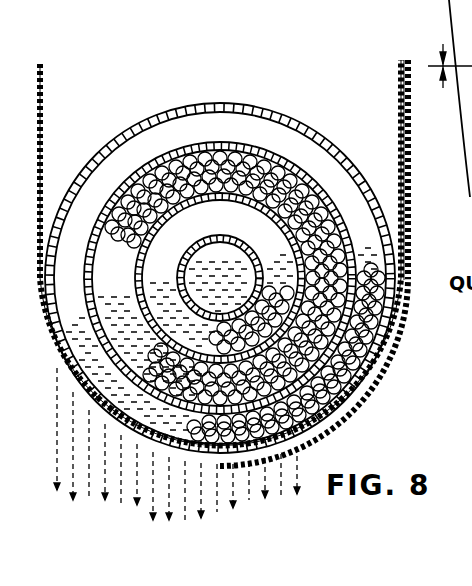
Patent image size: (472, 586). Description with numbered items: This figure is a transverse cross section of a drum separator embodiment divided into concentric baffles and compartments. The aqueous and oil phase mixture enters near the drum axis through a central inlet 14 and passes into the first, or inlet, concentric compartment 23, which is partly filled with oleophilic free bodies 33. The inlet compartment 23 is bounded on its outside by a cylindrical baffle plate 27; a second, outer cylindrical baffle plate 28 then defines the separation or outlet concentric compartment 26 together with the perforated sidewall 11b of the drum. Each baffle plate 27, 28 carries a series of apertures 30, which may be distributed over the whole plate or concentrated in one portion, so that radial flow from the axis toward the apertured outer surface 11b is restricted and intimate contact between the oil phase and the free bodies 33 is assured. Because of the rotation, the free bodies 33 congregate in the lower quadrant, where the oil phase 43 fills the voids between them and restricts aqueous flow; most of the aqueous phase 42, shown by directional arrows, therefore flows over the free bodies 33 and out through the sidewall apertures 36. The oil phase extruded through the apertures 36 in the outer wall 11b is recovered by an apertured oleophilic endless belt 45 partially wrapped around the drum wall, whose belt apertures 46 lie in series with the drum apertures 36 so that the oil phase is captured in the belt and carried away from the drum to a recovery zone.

The apertured sidewall 11b is at (200, 103).
The central inlet 14 is at (208, 270).
The inlet concentric compartment 23 is at (210, 233).
The outlet concentric compartment 26 is at (152, 137).
The cylindrical baffle plate 27 is at (266, 212).
The cylindrical baffle plate 28 is at (298, 173).
The baffle apertures 30 is at (135, 292).
The oleophilic free bodies 33 is at (135, 233).
The sidewall apertures 36 is at (298, 114).
The aqueous phase 42 is at (182, 520).
The oil phase 43 is at (410, 210).
The apertured oleophilic belt 45 is at (44, 86).
The belt apertures 46 is at (44, 118).